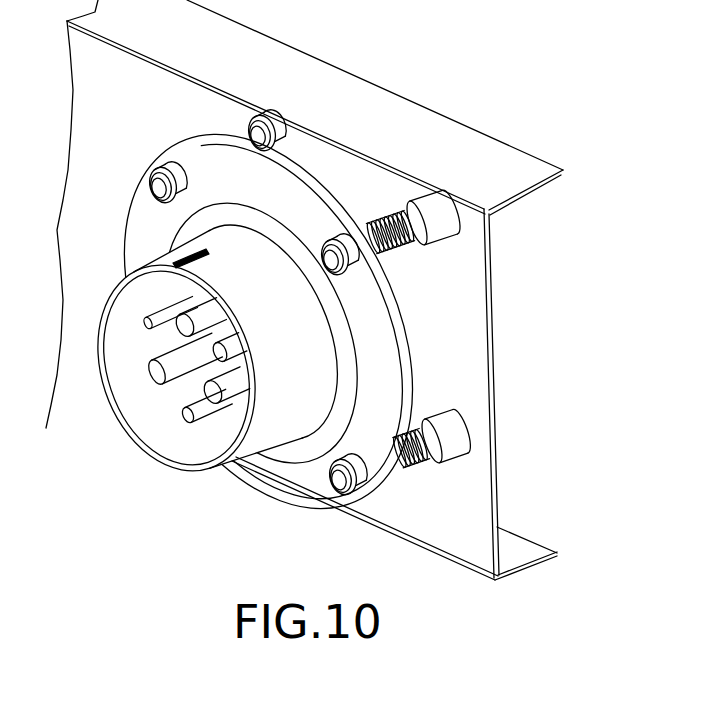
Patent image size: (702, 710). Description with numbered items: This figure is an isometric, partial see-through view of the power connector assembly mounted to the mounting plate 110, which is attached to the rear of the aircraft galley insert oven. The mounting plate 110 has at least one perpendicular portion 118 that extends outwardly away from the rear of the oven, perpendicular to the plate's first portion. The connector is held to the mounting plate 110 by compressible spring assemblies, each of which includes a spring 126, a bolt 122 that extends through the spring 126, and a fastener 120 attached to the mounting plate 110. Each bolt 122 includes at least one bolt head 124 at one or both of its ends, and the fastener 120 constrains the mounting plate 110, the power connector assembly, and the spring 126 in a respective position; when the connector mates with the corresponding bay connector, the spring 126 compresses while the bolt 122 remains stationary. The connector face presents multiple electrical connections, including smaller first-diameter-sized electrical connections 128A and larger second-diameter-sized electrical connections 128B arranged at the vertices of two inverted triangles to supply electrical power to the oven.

The mounting plate 110 is at (470, 350).
The perpendicular portion 118 is at (522, 163).
The fastener 120 is at (343, 497).
The bolt 122 is at (330, 482).
The bolt head 124 is at (450, 224).
The spring 126 is at (403, 252).
The first-diameter-sized electrical connections 128A is at (148, 323).
The second-diameter-sized electrical connections 128B is at (157, 372).